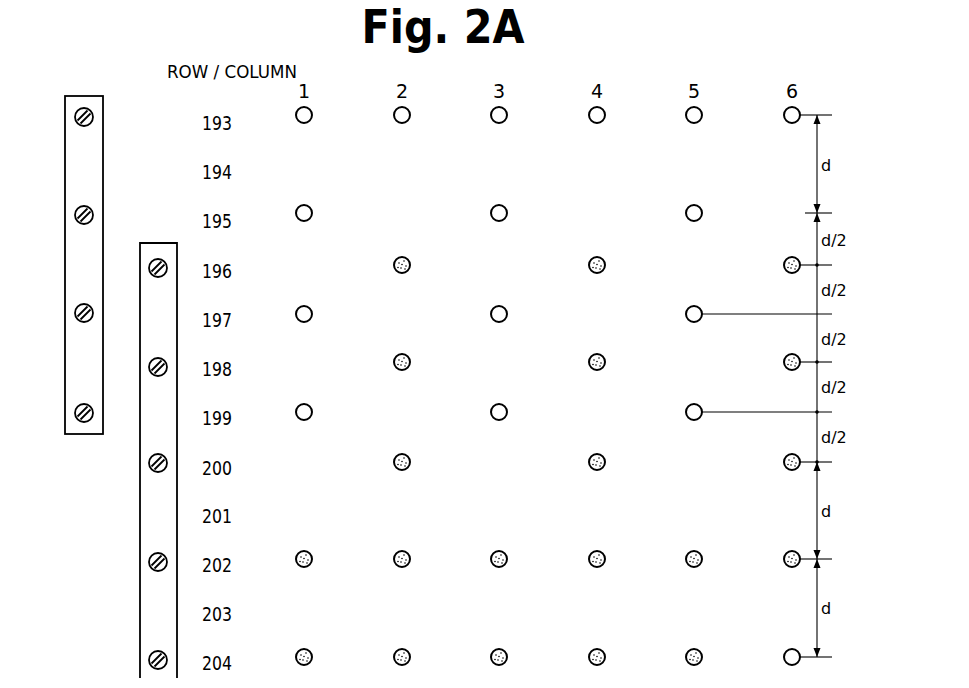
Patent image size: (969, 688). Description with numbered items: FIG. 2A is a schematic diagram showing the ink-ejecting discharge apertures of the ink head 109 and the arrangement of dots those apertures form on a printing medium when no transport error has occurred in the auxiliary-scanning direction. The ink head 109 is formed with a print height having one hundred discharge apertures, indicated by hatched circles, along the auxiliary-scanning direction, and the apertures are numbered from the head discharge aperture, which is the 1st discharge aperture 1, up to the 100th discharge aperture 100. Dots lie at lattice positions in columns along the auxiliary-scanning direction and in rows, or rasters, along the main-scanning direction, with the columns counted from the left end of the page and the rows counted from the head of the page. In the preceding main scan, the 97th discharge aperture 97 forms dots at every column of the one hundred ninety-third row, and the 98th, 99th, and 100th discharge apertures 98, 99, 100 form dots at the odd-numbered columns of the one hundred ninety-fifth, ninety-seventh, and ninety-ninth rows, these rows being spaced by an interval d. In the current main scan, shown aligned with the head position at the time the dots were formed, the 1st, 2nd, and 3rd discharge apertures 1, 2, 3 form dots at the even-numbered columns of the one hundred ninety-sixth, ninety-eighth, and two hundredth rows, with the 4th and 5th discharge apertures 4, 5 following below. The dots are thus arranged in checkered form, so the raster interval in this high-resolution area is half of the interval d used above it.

The ink head 109 is at (103, 104).
The 97th discharge aperture 97 is at (65, 118).
The 98th discharge aperture 98 is at (65, 216).
The 99th discharge aperture 99 is at (65, 314).
The 100th discharge aperture 100 is at (60, 414).
The 1st discharge aperture 1 is at (146, 269).
The 2nd discharge aperture 2 is at (146, 368).
The 3rd discharge aperture 3 is at (146, 464).
The 4th discharge aperture 4 is at (146, 563).
The 5th discharge aperture 5 is at (146, 661).